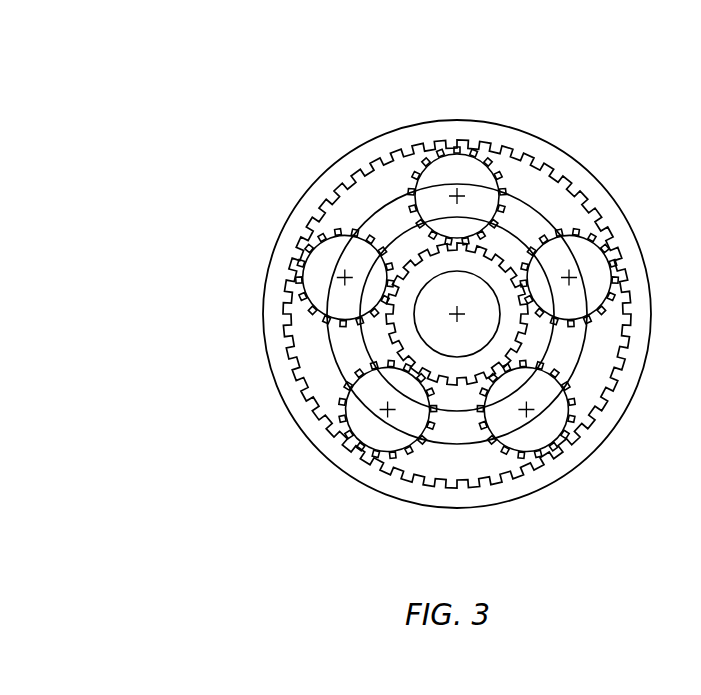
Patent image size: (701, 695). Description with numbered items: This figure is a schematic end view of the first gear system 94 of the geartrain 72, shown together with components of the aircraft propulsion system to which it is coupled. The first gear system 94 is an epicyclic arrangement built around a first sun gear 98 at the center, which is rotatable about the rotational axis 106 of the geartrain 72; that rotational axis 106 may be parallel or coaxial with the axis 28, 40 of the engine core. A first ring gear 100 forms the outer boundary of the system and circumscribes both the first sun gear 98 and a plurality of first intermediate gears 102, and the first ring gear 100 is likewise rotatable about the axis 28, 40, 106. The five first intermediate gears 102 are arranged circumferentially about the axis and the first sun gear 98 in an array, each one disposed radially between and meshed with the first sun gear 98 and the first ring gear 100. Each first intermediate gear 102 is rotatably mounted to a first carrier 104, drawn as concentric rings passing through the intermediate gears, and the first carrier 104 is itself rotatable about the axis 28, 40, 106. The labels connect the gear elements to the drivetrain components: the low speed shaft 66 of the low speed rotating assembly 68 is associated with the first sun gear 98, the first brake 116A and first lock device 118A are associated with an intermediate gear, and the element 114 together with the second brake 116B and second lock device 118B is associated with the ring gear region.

The geartrain 72 is at (358, 294).
The first gear system 94 is at (358, 294).
The first sun gear 98 is at (520, 341).
The first ring gear 100 is at (433, 120).
The ring gear 114 is at (324, 263).
The second brake 116B is at (324, 263).
The second lock device 118B is at (382, 130).
The first carrier 104 is at (382, 207).
The first intermediate gears 102 is at (332, 230).
The first brake 116A is at (211, 272).
The first lock device 118A is at (335, 265).
The low speed shaft 66 is at (272, 399).
The low speed rotating assembly 68 is at (390, 337).
The axis 28 is at (457, 413).
The core axis 40 is at (457, 413).
The rotational axis 106 is at (458, 318).